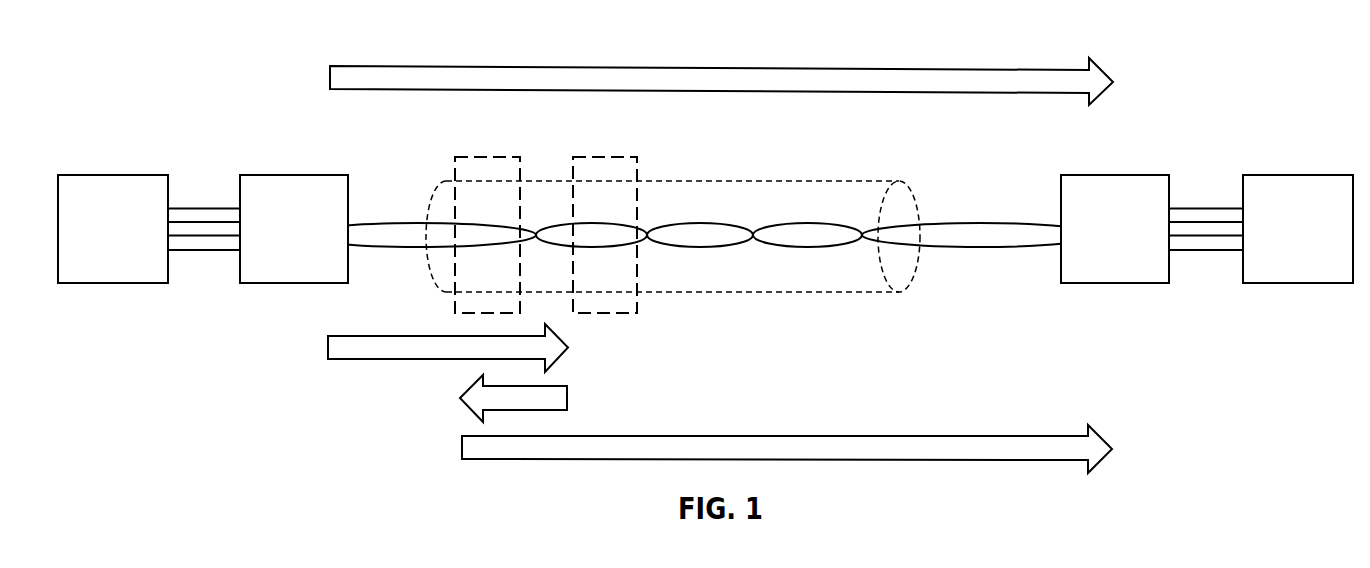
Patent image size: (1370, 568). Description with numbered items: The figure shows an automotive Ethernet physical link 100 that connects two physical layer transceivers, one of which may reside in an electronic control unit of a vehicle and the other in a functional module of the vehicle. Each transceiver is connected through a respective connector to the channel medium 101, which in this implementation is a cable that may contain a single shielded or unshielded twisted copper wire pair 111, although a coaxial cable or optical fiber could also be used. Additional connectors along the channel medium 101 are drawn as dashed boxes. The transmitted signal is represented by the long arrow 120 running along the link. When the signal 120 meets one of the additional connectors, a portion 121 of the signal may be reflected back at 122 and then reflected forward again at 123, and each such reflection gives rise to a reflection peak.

The automotive Ethernet physical link 100 is at (694, 264).
The channel medium 101 is at (768, 181).
The twisted copper wire pair 111 is at (983, 248).
The transmitted signal 120 is at (351, 65).
The portion of the signal 121 is at (357, 360).
The reflection back 122 is at (477, 410).
The forward reflection 123 is at (480, 459).